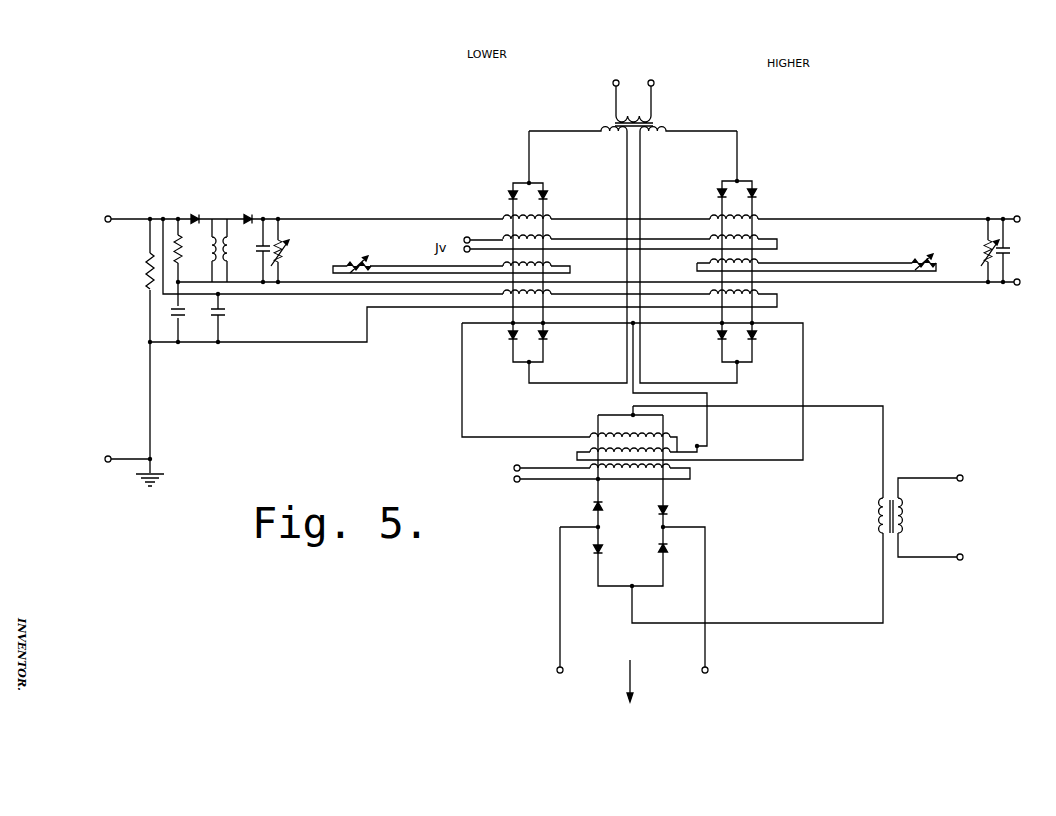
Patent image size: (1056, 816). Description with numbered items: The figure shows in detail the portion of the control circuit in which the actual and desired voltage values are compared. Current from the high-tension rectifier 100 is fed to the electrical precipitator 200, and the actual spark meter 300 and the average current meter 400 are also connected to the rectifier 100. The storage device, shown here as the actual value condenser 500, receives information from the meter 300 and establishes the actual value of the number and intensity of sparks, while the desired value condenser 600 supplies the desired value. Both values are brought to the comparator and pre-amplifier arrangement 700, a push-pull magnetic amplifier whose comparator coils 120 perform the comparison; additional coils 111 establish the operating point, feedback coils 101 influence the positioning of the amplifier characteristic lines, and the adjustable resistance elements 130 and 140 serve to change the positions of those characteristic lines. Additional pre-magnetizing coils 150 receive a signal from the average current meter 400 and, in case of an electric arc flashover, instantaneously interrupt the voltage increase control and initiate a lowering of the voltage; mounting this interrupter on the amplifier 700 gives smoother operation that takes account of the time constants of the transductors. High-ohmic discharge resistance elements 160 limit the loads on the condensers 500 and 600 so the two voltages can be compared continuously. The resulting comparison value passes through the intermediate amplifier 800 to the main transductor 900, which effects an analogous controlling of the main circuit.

The high-tension rectifier 100 is at (66, 219).
The electrical precipitator 200 is at (82, 443).
The actual spark meter 300 is at (240, 213).
The average current meter 400 is at (224, 313).
The actual value condenser 500 is at (263, 253).
The desired value condenser 600 is at (1000, 256).
The comparator and pre-amplifier arrangement 700 is at (762, 78).
The intermediate amplifier 800 is at (592, 482).
The main transductor 900 is at (637, 602).
The feedback coils 101 is at (553, 263).
The additional coils 111 is at (553, 235).
The comparator coils 120 is at (547, 216).
The adjustable resistance element 130 is at (353, 260).
The adjustable resistance element 140 is at (915, 263).
The pre-magnetizing coils 150 is at (551, 308).
The high-ohmic discharge resistance elements 160 is at (287, 256).